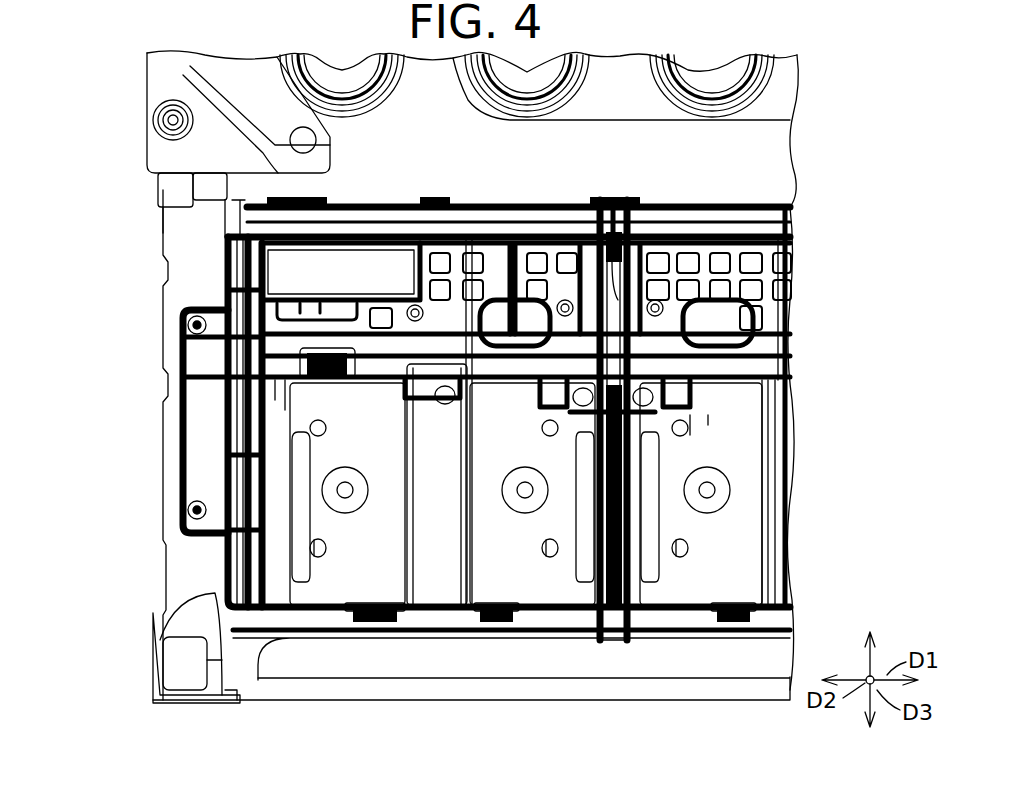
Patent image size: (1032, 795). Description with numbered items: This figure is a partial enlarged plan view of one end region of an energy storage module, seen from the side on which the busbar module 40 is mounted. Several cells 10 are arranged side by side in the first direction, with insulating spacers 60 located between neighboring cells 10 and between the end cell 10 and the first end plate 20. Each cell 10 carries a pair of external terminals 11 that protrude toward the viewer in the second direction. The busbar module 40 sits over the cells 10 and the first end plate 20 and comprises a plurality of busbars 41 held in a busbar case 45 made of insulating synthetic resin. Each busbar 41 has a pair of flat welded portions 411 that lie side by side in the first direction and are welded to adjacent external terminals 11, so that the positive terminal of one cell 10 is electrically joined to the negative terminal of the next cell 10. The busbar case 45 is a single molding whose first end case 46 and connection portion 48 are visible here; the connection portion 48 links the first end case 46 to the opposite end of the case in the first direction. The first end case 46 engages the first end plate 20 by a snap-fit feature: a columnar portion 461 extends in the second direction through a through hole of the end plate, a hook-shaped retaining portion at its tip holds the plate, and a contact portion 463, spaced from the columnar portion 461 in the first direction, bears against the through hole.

The cell 10 is at (328, 620).
The external terminal 11 is at (305, 500).
The first end plate 20 is at (172, 563).
The busbar module 40 is at (196, 274).
The busbar 41 is at (432, 573).
The welded portion 411 is at (380, 560).
The busbar case 45 is at (220, 577).
The first end case 46 is at (525, 617).
The connection portion 48 is at (696, 634).
The spacer 60 is at (250, 615).
The columnar portion 461 is at (188, 325).
The contact portion 463 is at (197, 323).